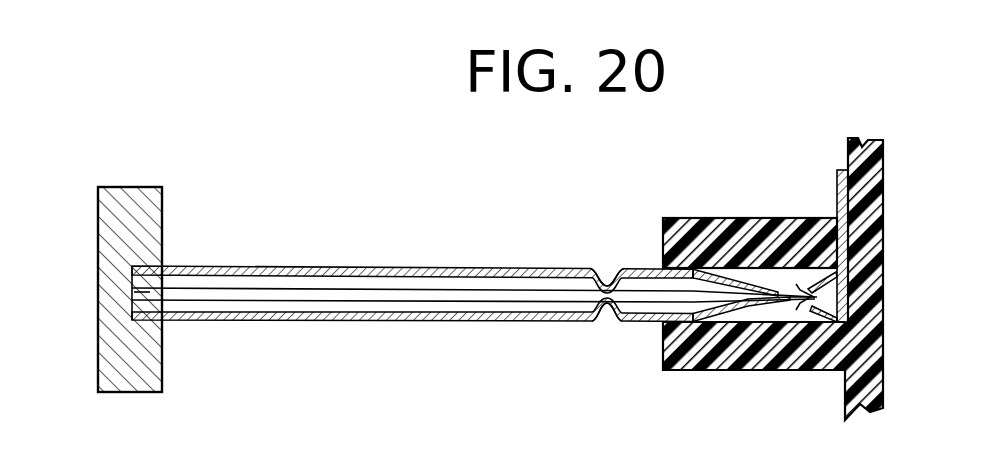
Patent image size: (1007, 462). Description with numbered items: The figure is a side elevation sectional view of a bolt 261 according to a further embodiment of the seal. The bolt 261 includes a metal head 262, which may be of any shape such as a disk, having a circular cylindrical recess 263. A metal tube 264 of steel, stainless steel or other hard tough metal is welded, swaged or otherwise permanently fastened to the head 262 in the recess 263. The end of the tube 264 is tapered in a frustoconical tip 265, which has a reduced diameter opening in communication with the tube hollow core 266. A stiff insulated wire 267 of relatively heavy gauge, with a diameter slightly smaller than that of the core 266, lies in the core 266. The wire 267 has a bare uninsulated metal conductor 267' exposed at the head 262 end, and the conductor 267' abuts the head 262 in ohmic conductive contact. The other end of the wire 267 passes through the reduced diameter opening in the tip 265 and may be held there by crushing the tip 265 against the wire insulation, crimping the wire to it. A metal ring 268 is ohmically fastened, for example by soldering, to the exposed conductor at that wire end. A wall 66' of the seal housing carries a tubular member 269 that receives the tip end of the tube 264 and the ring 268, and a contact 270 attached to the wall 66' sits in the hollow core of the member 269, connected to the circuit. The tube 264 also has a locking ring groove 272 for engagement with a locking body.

The bolt 261 is at (448, 185).
The metal head 262 is at (140, 395).
The circular cylindrical recess 263 is at (148, 298).
The metal tube 264 is at (543, 268).
The frustoconical tip 265 is at (763, 283).
The tube hollow core 266 is at (313, 305).
The stiff insulated wire 267 is at (473, 339).
The bare uninsulated metal conductor 267' is at (86, 288).
The metal ring 268 is at (763, 357).
The tubular member 269 is at (680, 218).
The contact 270 is at (806, 282).
The locking ring groove 272 is at (607, 318).
The wall 66' is at (877, 249).